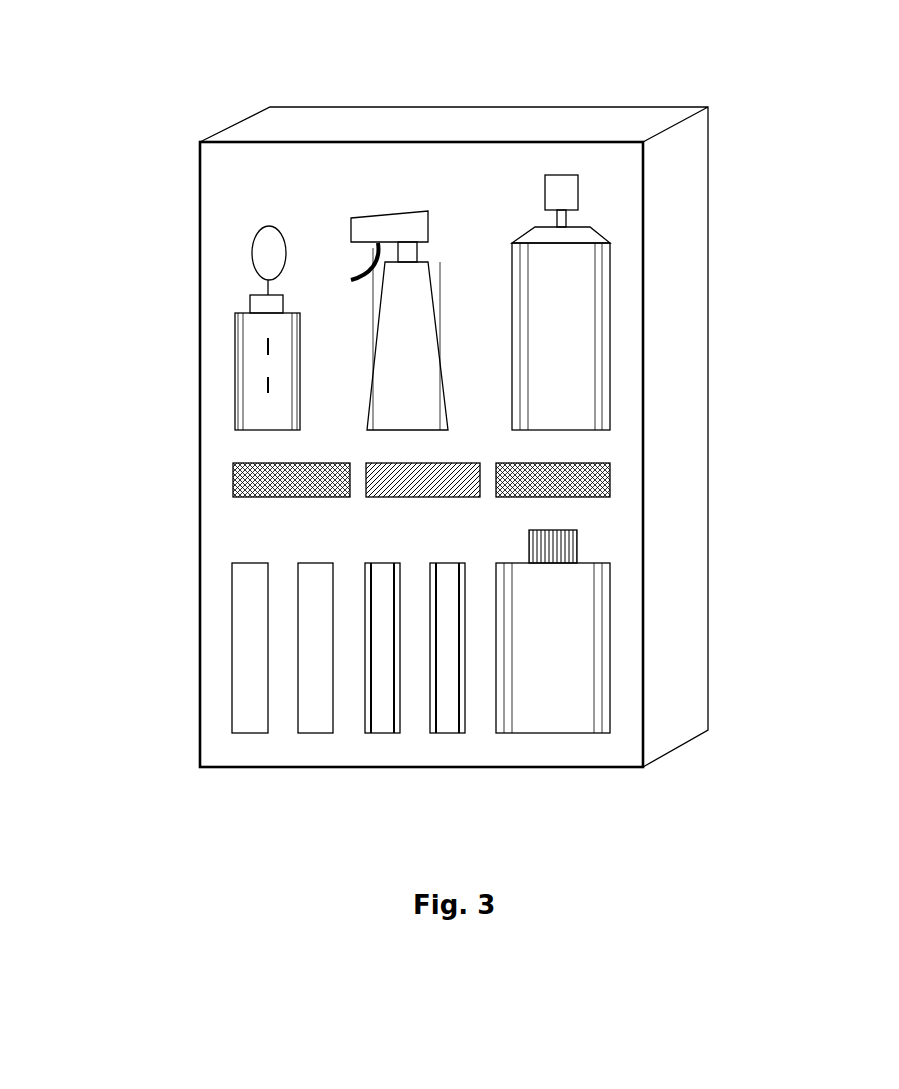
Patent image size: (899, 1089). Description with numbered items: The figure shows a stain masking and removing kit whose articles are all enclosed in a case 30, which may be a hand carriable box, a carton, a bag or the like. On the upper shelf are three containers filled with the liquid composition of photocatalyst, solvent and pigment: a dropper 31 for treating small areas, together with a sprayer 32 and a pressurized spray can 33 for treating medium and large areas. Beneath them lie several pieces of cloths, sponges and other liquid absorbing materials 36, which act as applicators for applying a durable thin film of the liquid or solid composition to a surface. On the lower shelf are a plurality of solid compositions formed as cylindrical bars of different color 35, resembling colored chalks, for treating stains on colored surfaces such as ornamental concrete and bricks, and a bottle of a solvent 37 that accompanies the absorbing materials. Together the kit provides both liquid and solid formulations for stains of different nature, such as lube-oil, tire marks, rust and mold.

The case 30 is at (675, 208).
The dropper 31 is at (250, 328).
The sprayer 32 is at (383, 226).
The pressurized spray can 33 is at (590, 328).
The cylindrical bars of different color 35 is at (250, 665).
The liquid absorbing materials 36 is at (265, 480).
The bottle of a solvent 37 is at (577, 614).